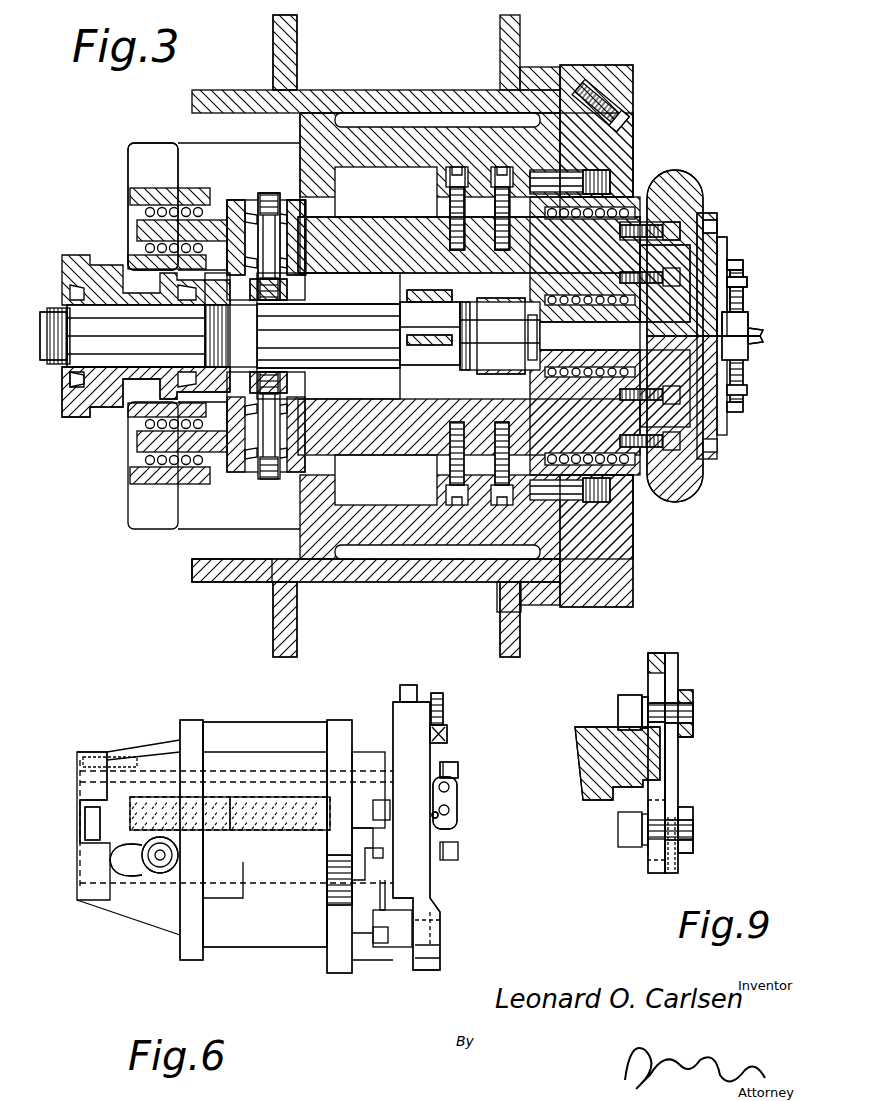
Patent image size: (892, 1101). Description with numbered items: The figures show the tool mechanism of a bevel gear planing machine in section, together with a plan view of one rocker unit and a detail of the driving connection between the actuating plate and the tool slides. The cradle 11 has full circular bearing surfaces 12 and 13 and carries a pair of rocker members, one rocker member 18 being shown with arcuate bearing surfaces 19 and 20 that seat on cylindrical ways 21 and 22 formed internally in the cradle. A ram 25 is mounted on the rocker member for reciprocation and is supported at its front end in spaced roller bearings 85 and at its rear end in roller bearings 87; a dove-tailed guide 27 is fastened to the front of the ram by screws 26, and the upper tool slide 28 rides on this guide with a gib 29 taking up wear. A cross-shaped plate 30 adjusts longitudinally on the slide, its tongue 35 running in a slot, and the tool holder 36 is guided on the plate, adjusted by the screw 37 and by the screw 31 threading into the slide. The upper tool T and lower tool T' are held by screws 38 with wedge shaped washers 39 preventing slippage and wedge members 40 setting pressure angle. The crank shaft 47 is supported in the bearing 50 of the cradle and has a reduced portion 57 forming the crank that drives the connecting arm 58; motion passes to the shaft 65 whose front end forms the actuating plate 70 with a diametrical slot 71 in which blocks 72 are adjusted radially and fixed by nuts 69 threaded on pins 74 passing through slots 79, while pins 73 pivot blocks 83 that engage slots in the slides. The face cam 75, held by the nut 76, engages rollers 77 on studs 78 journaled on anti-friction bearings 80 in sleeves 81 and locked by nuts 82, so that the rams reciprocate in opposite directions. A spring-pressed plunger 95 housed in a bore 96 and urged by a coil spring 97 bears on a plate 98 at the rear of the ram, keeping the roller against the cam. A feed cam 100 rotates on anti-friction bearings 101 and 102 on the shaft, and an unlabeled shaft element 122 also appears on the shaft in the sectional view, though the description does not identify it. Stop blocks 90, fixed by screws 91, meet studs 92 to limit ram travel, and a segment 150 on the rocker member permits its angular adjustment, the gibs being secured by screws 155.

In FIG. 3, the cradle 11 is at (518, 640).
In FIG. 3, the bearing surface 12 is at (232, 585).
In FIG. 3, the bearing surface 13 is at (590, 605).
In FIG. 3, the rocker member 18 is at (416, 150).
In FIG. 6, the rocker member 18 is at (256, 945).
In FIG. 3, the arcuate bearing surface 19 is at (326, 112).
In FIG. 6, the arcuate bearing surface 19 is at (192, 958).
In FIG. 3, the arcuate bearing surface 20 is at (552, 114).
In FIG. 6, the arcuate bearing surface 20 is at (338, 972).
In FIG. 3, the cylindrical way 21 is at (330, 580).
In FIG. 3, the cylindrical way 22 is at (535, 590).
In FIG. 3, the ram 25 is at (378, 222).
In FIG. 3, the screw 26 is at (710, 213).
In FIG. 3, the dove-tailed guide 27 is at (727, 240).
In FIG. 3, the upper tool slide 28 is at (700, 186).
In FIG. 6, the upper tool slide 28 is at (420, 880).
In FIG. 3, the gib 29 is at (668, 186).
In FIG. 6, the gib 29 is at (412, 688).
In FIG. 3, the cross-shaped plate 30 is at (618, 316).
In FIG. 6, the screw 31 is at (446, 698).
In FIG. 3, the tongue 35 is at (744, 264).
In FIG. 6, the tongue 35 is at (460, 766).
In FIG. 3, the tool holder 36 is at (748, 284).
In FIG. 3, the screw 37 is at (717, 220).
In FIG. 6, the screw 37 is at (440, 818).
In FIG. 3, the screw 38 is at (744, 274).
In FIG. 6, the screw 38 is at (458, 812).
In FIG. 3, the wedge shaped washer 39 is at (744, 295).
In FIG. 3, the wedge member 40 is at (750, 322).
In FIG. 3, the upper tool T is at (767, 324).
In FIG. 3, the lower tool T' is at (773, 350).
In FIG. 3, the crank shaft 47 is at (404, 364).
In FIG. 3, the bearing 50 is at (478, 374).
In FIG. 3, the reduced diameter portion 57 is at (440, 345).
In FIG. 3, the connecting arm 58 is at (412, 292).
In FIG. 9, the shaft 65 is at (592, 795).
In FIG. 9, the nut 69 is at (620, 698).
In FIG. 9, the actuating plate 70 is at (668, 790).
In FIG. 9, the diametrical slot 71 is at (678, 672).
In FIG. 9, the block 72 is at (686, 690).
In FIG. 9, the pin 73 is at (694, 712).
In FIG. 9, the pin 74 is at (645, 698).
In FIG. 3, the cam 75 is at (256, 306).
In FIG. 3, the nut 76 is at (206, 318).
In FIG. 3, the roller 77 is at (290, 286).
In FIG. 3, the stud 78 is at (302, 200).
In FIG. 9, the slot 79 is at (650, 700).
In FIG. 3, the set of anti-friction bearings 80 is at (258, 200).
In FIG. 3, the sleeve 81 is at (236, 207).
In FIG. 6, the sleeve 81 is at (162, 873).
In FIG. 3, the nut 82 is at (290, 200).
In FIG. 6, the nut 82 is at (150, 872).
In FIG. 9, the block 83 is at (694, 730).
In FIG. 3, the roller bearings 85 is at (648, 200).
In FIG. 3, the roller bearings 87 is at (148, 195).
In FIG. 3, the stop block 90 is at (499, 170).
In FIG. 3, the screw 91 is at (453, 170).
In FIG. 3, the stud 92 is at (595, 168).
In FIG. 6, the spring-pressed plunger 95 is at (90, 795).
In FIG. 6, the bore 96 is at (285, 805).
In FIG. 6, the coil spring 97 is at (228, 805).
In FIG. 6, the plate 98 is at (88, 828).
In FIG. 3, the cam 100 is at (98, 408).
In FIG. 3, the anti-friction bearing 101 is at (60, 310).
In FIG. 3, the anti-friction bearing 102 is at (152, 376).
In FIG. 3, the spline 122 is at (228, 316).
In FIG. 6, the segment 150 is at (325, 905).
In FIG. 3, the screw 155 is at (636, 122).